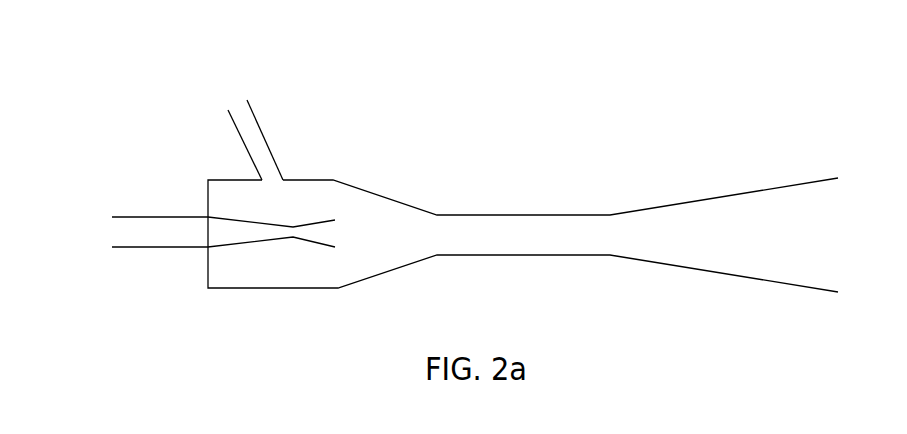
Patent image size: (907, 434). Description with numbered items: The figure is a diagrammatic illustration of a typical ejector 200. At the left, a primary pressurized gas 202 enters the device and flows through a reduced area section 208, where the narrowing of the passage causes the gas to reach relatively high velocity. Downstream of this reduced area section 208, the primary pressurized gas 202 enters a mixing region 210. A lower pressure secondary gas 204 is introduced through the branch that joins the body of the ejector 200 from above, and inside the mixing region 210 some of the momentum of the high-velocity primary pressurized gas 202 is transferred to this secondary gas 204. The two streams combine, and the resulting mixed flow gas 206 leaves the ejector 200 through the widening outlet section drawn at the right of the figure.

The ejector 200 is at (470, 161).
The primary pressurized gas 202 is at (137, 228).
The secondary gas 204 is at (257, 135).
The mixed flow gas 206 is at (775, 242).
The reduced area section 208 is at (312, 227).
The mixing region 210 is at (395, 227).